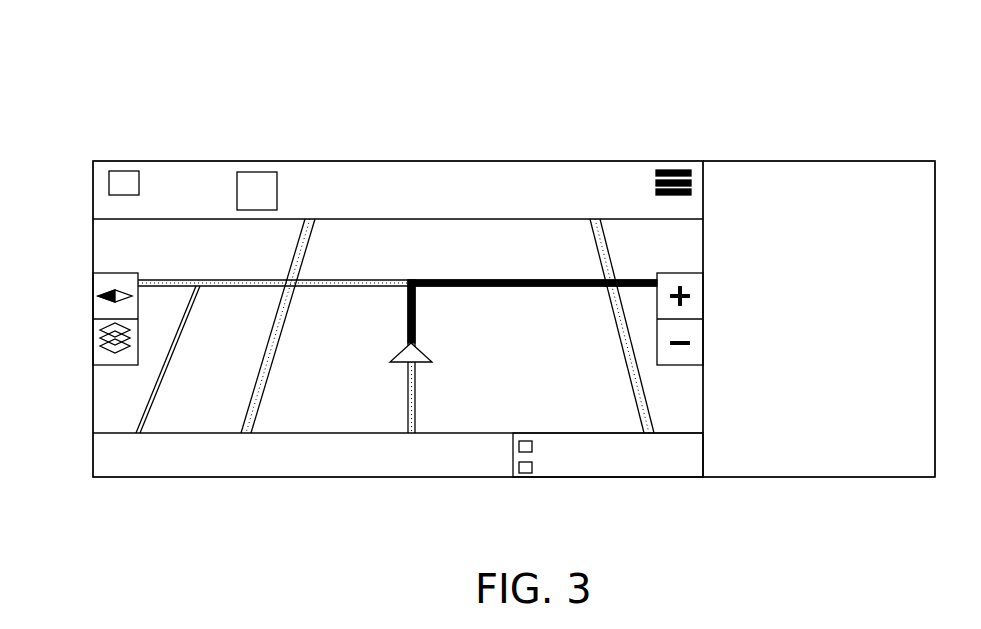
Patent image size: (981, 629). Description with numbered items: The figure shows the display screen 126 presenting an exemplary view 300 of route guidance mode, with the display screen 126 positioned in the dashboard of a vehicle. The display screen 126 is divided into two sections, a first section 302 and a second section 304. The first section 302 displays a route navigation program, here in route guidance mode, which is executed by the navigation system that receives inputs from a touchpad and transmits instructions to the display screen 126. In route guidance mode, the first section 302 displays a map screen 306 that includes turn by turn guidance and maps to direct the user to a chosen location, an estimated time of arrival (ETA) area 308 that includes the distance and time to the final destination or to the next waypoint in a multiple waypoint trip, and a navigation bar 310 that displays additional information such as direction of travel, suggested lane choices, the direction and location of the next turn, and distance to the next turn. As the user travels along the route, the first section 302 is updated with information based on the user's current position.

The display screen 126 is at (434, 161).
The exemplary view 300 is at (476, 282).
The first section 302 is at (362, 302).
The second section 304 is at (848, 120).
The map screen 306 is at (111, 255).
The estimated time of arrival (ETA) area 308 is at (667, 467).
The navigation bar 310 is at (392, 155).